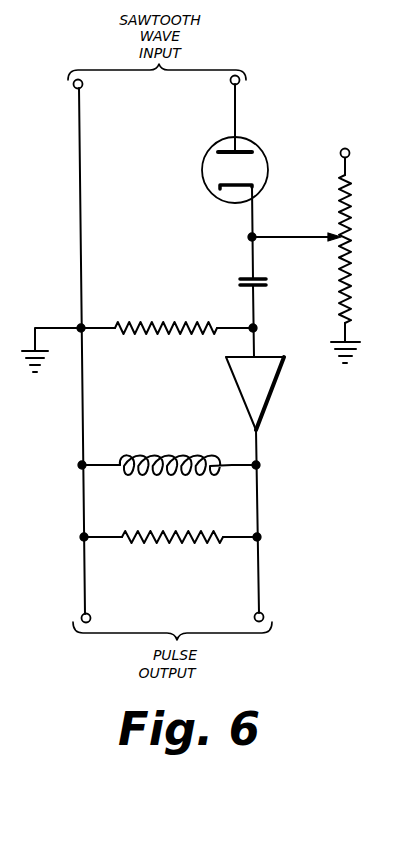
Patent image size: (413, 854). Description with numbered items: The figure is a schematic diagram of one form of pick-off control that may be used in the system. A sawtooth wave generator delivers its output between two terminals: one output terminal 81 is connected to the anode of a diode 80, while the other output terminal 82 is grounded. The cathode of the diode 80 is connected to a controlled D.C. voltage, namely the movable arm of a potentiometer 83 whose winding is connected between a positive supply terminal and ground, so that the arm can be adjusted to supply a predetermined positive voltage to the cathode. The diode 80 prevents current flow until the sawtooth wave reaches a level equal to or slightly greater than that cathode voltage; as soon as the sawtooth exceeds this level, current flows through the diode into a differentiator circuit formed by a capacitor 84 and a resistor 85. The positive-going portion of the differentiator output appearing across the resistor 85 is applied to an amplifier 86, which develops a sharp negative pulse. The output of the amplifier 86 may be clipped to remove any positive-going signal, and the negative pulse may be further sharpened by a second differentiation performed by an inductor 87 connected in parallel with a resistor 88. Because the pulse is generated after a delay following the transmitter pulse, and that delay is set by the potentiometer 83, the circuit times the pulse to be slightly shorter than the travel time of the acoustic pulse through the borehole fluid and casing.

The diode 80 is at (202, 168).
The output terminal of the sawtooth wave generator 81 is at (240, 84).
The other output terminal of the sawtooth wave generator 82 is at (74, 88).
The potentiometer 83 is at (353, 215).
The capacitor 84 is at (262, 277).
The resistor 85 is at (172, 297).
The amplifier 86 is at (273, 396).
The inductor 87 is at (173, 428).
The resistor 88 is at (166, 538).